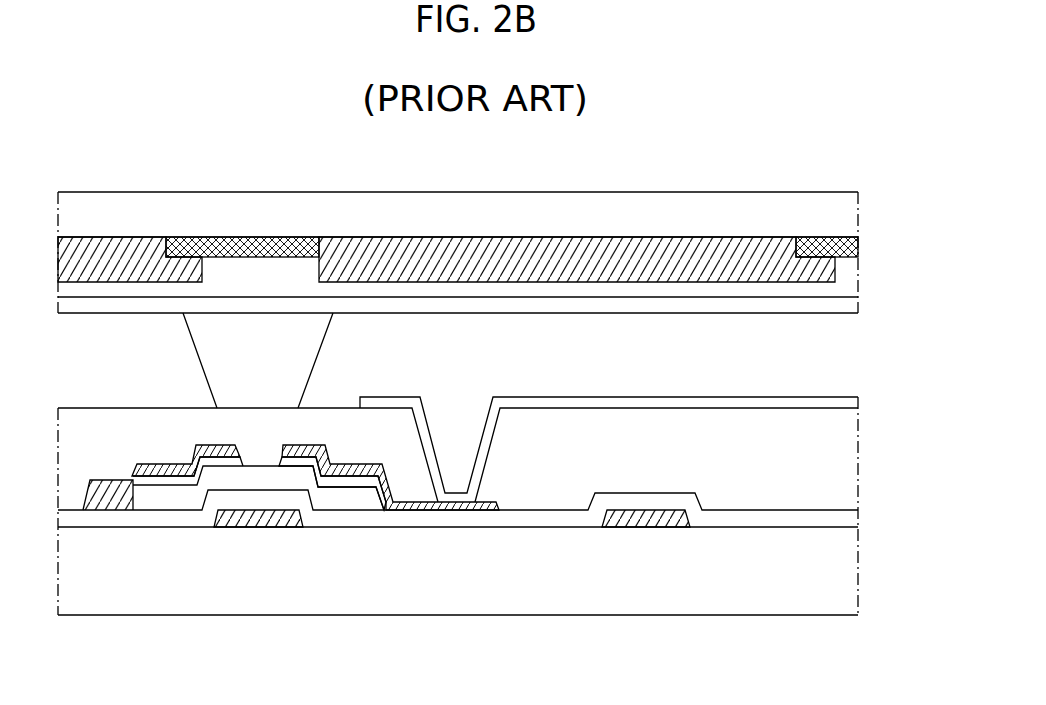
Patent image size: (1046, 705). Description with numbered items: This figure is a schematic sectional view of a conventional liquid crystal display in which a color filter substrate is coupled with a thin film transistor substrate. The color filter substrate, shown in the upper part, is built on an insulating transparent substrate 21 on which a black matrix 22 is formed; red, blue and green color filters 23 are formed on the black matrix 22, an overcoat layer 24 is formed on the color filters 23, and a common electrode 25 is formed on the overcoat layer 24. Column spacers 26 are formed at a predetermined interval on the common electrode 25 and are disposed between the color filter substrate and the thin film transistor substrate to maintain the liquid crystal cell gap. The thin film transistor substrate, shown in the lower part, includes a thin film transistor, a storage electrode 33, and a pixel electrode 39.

The insulating transparent substrate 21 is at (848, 212).
The black matrix 22 is at (859, 243).
The color filters 23 is at (828, 271).
The overcoat layer 24 is at (848, 287).
The common electrode 25 is at (848, 307).
The column spacers 26 is at (309, 340).
The pixel electrode 39 is at (848, 404).
The storage electrode 33 is at (648, 528).